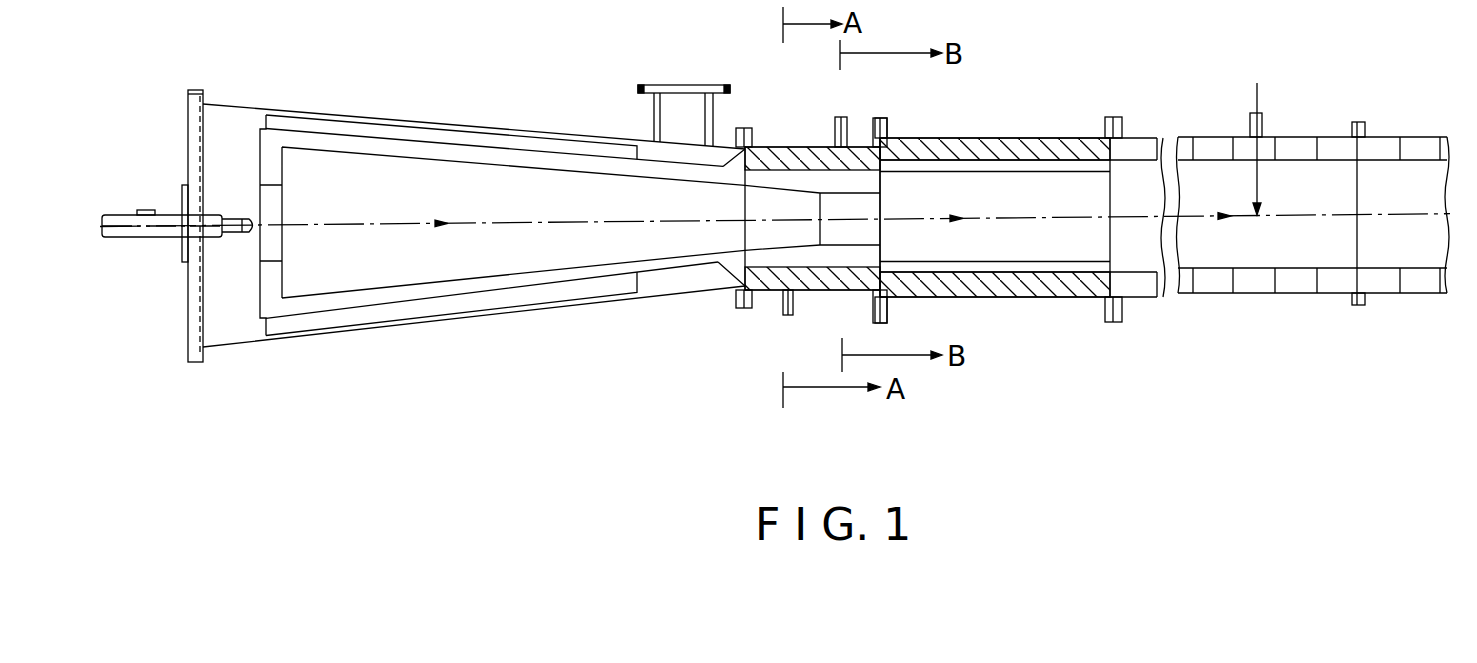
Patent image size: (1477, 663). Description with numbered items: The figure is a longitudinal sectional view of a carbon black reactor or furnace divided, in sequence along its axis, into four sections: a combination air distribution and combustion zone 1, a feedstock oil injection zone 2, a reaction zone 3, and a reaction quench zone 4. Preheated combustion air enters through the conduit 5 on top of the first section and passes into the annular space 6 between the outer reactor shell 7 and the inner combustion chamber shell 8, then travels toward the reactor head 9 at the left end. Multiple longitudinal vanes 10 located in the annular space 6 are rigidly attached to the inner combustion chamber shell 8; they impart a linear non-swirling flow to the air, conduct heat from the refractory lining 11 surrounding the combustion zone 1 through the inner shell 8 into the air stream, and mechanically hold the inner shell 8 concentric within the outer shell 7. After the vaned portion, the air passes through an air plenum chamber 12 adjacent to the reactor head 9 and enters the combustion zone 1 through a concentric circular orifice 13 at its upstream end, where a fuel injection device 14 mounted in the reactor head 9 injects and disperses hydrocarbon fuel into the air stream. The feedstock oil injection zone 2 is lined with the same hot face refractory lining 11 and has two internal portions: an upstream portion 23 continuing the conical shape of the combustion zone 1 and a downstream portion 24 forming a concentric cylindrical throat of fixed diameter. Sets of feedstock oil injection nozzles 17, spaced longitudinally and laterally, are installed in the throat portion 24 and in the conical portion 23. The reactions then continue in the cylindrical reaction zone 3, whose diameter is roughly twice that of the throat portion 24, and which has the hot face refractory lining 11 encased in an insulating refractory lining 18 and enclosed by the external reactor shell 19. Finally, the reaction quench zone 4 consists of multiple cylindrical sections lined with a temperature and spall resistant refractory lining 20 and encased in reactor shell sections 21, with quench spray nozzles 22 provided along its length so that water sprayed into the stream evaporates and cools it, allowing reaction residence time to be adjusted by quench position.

The combustion zone 1 is at (375, 190).
The feedstock oil injection zone 2 is at (785, 216).
The reaction zone 3 is at (1013, 204).
The reaction quench zone 4 is at (1222, 202).
The conduit 5 is at (655, 113).
The annular space 6 is at (707, 280).
The outer reactor shell 7 is at (322, 107).
The inner combustion chamber shell 8 is at (477, 148).
The reactor head 9 is at (195, 90).
The longitudinal vanes 10 is at (405, 132).
The hot face refractory lining 11 is at (455, 278).
The air plenum chamber 12 is at (247, 176).
The concentric circular orifice 13 is at (272, 241).
The fuel injection device 14 is at (213, 347).
The feedstock oil injection nozzles 17 is at (850, 122).
The insulating refractory lining 18 is at (1023, 147).
The external reactor shell 19 is at (1007, 297).
The refractory lining 20 is at (1218, 283).
The reactor shell sections 21 is at (1325, 293).
The quench spray nozzles 22 is at (1342, 122).
The upstream portion 23 is at (765, 230).
The downstream portion 24 is at (850, 233).